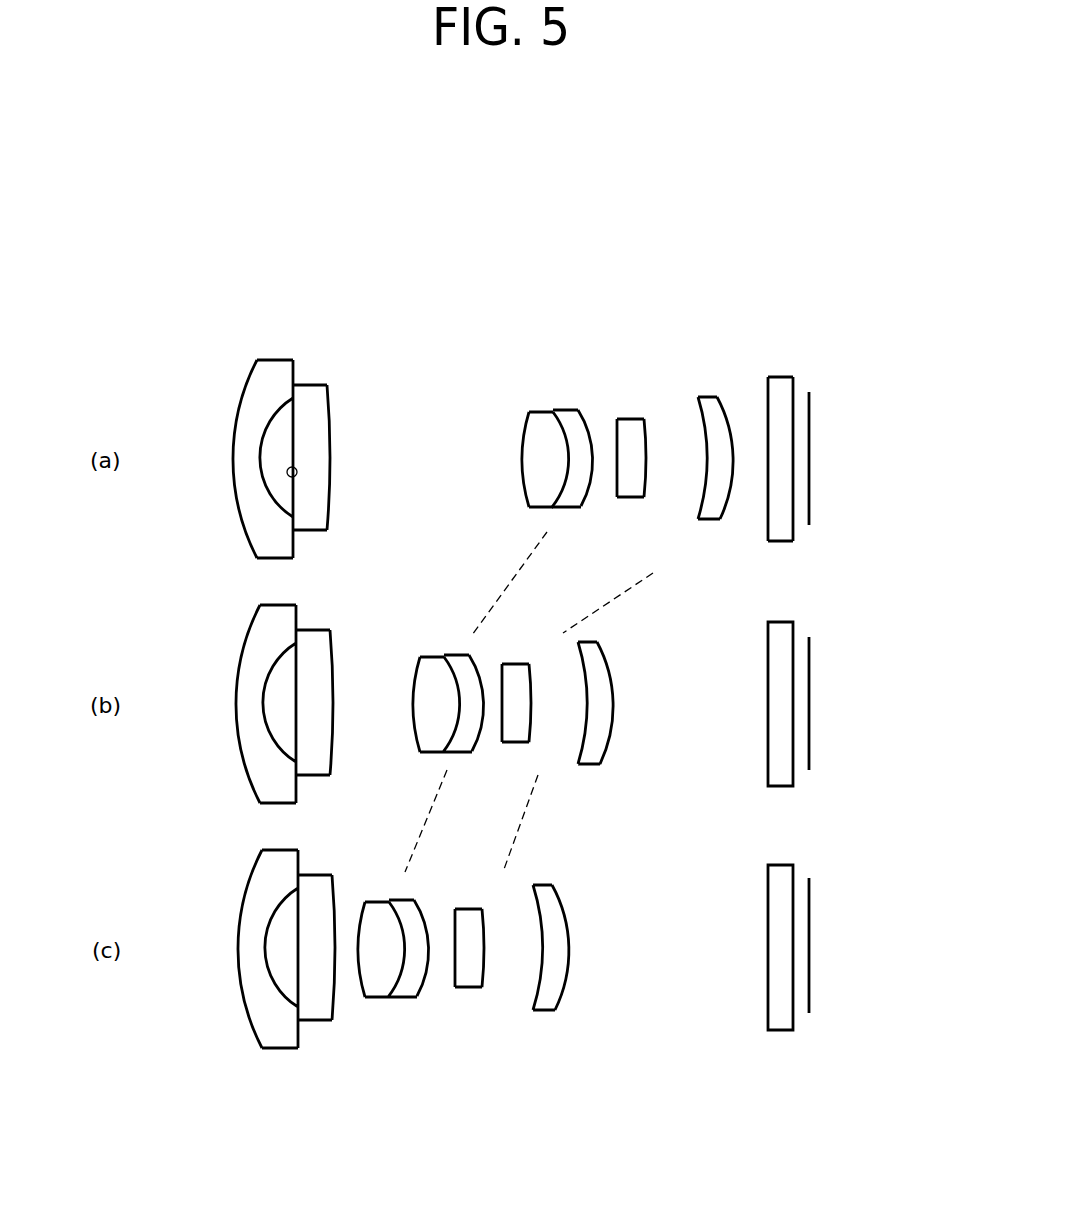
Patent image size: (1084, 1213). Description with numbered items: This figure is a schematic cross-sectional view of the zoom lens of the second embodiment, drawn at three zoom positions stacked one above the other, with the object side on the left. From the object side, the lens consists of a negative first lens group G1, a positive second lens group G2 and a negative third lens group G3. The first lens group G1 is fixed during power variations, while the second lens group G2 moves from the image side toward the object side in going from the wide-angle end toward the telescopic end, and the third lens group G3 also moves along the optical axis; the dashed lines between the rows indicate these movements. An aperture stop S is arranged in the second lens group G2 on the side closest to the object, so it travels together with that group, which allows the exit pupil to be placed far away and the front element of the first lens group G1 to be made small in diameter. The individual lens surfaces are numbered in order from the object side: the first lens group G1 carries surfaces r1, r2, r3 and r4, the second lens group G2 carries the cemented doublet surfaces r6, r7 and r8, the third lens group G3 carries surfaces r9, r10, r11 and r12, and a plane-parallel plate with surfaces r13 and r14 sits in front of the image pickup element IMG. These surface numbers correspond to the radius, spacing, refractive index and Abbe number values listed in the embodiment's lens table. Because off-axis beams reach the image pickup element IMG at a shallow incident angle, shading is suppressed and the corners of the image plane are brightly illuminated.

The first lens group G1 is at (330, 268).
The second lens group G2 is at (587, 266).
The third lens group G3 is at (728, 265).
The aperture stop S is at (521, 415).
The lens surface r1 is at (243, 390).
The lens surface r2 is at (273, 423).
The lens surface r3 is at (293, 483).
The lens surface r4 is at (328, 513).
The lens surface r6 is at (522, 460).
The lens surface r7 is at (568, 423).
The lens surface r8 is at (589, 425).
The lens surface r9 is at (615, 481).
The lens surface r10 is at (648, 424).
The lens surface r11 is at (727, 541).
The lens surface r12 is at (721, 403).
The lens surface r13 is at (767, 522).
The lens surface r14 is at (794, 387).
The image pickup element IMG is at (809, 518).